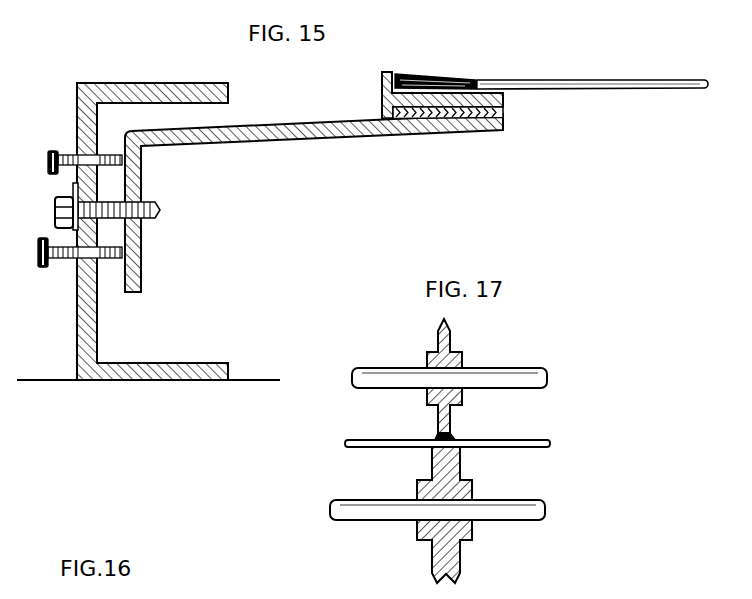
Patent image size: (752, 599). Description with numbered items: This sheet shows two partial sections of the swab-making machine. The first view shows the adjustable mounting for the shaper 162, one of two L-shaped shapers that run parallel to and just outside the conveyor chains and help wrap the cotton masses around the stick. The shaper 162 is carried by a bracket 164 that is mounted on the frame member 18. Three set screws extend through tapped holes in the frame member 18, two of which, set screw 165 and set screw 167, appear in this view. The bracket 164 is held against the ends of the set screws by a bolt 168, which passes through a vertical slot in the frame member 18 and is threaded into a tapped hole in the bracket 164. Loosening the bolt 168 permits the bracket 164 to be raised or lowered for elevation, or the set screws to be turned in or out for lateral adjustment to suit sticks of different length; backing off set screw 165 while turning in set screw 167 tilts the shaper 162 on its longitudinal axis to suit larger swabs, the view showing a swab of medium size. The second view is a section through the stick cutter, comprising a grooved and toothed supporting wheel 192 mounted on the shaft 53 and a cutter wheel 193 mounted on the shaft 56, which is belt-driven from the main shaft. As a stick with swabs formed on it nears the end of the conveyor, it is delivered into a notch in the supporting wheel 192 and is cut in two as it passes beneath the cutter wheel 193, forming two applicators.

In FIG. 15, the frame member 18 is at (85, 346).
In FIG. 15, the shaper 162 is at (380, 86).
In FIG. 15, the bracket 164 is at (338, 134).
In FIG. 15, the set screw 165 is at (53, 150).
In FIG. 15, the set screw 167 is at (61, 264).
In FIG. 15, the bolt 168 is at (55, 212).
In FIG. 17, the shaft 56 is at (392, 383).
In FIG. 17, the shaft 53 is at (378, 511).
In FIG. 17, the supporting wheel 192 is at (461, 556).
In FIG. 17, the cutter wheel 193 is at (452, 418).